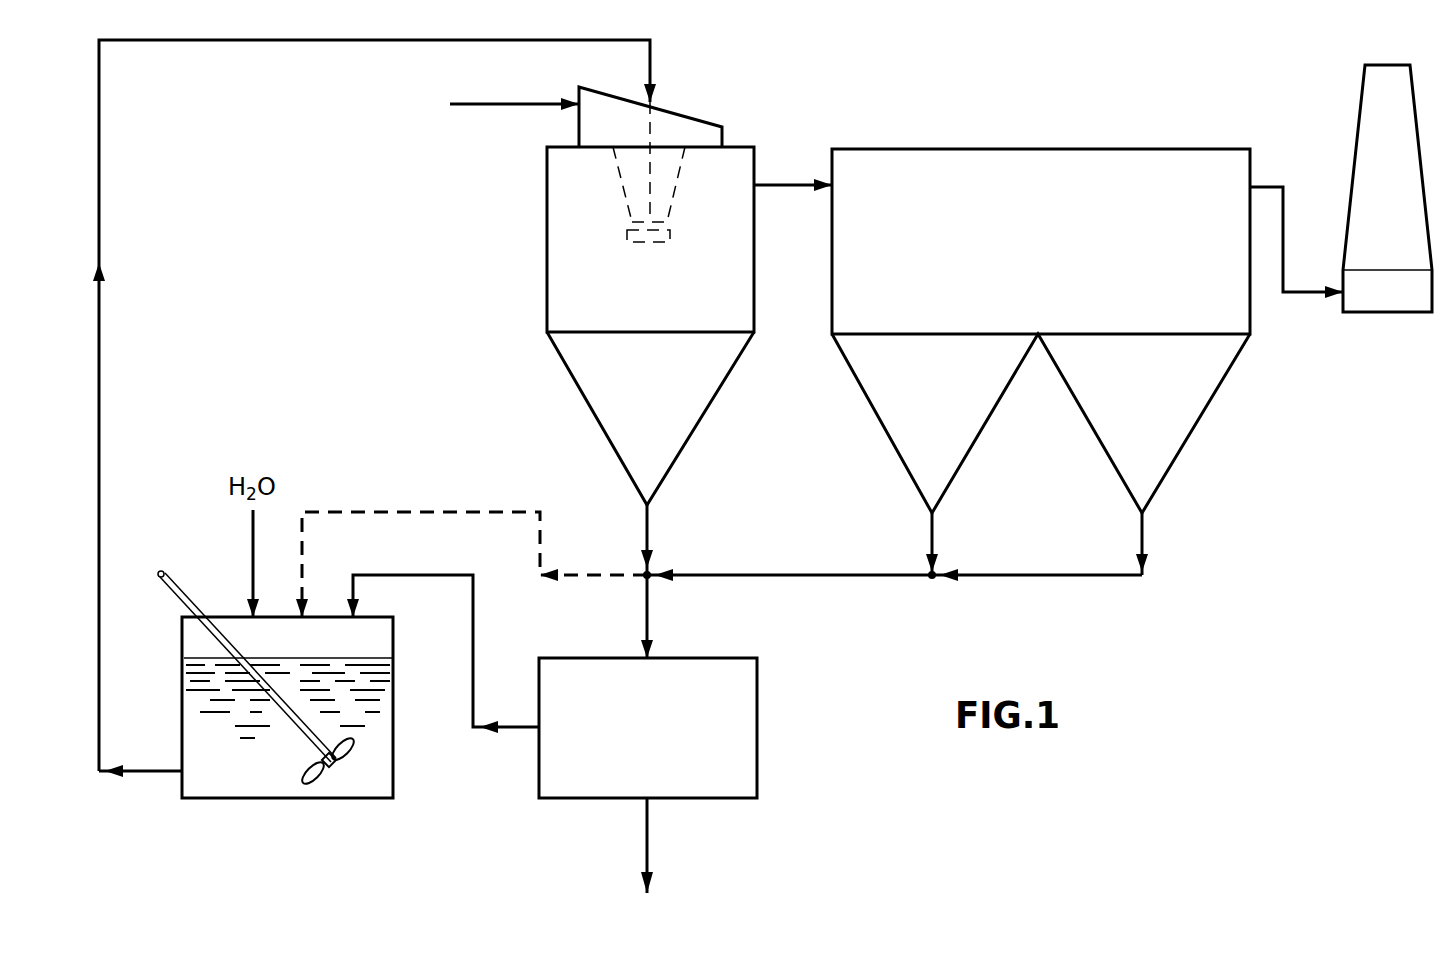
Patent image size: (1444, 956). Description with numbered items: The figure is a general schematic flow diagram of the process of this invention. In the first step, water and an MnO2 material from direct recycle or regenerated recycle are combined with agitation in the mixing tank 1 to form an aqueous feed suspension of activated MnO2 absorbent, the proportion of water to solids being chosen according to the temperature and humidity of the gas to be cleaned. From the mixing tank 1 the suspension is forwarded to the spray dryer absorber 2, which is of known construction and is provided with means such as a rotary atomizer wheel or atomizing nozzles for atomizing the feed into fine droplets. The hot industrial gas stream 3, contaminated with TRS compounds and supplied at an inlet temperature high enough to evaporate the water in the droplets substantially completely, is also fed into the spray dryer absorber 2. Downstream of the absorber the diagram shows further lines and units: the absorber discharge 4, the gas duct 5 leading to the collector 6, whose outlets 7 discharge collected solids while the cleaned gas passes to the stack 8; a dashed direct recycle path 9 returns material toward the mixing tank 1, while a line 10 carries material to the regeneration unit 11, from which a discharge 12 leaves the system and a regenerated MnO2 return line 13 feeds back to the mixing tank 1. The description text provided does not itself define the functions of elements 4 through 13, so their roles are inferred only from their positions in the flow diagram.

The mixing tank 1 is at (240, 798).
The spray dryer absorber 2 is at (560, 231).
The hot industrial gas stream 3 is at (522, 103).
The absorber discharge line 4 is at (649, 528).
The gas duct to filter 5 is at (798, 180).
The bag filter / dust collector 6 is at (1097, 157).
The filter hopper outlets 7 is at (928, 530).
The stack 8 is at (1372, 101).
The recycle line (dashed) 9 is at (450, 508).
The line to regeneration 10 is at (649, 611).
The regeneration unit 11 is at (745, 693).
The regeneration discharge 12 is at (645, 834).
The MnO2 return line 13 is at (477, 612).